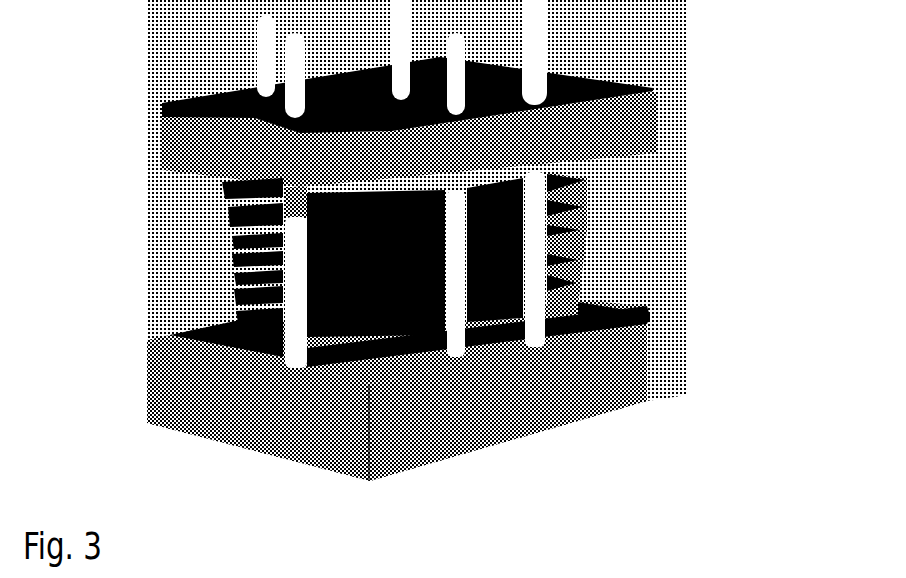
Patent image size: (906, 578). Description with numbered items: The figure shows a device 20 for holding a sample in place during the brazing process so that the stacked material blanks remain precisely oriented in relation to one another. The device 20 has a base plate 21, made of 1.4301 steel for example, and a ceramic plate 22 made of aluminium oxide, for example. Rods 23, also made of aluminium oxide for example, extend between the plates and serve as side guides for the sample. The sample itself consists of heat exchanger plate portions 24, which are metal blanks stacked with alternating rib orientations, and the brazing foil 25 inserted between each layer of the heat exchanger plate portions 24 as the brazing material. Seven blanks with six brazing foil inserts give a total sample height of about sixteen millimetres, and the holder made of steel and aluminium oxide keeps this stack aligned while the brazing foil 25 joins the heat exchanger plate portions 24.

The device 20 is at (109, 107).
The base plate 21 is at (647, 350).
The ceramic plate 22 is at (580, 305).
The rods 23 is at (538, 247).
The heat exchanger plate portions 24 is at (240, 187).
The brazing foil 25 is at (238, 203).